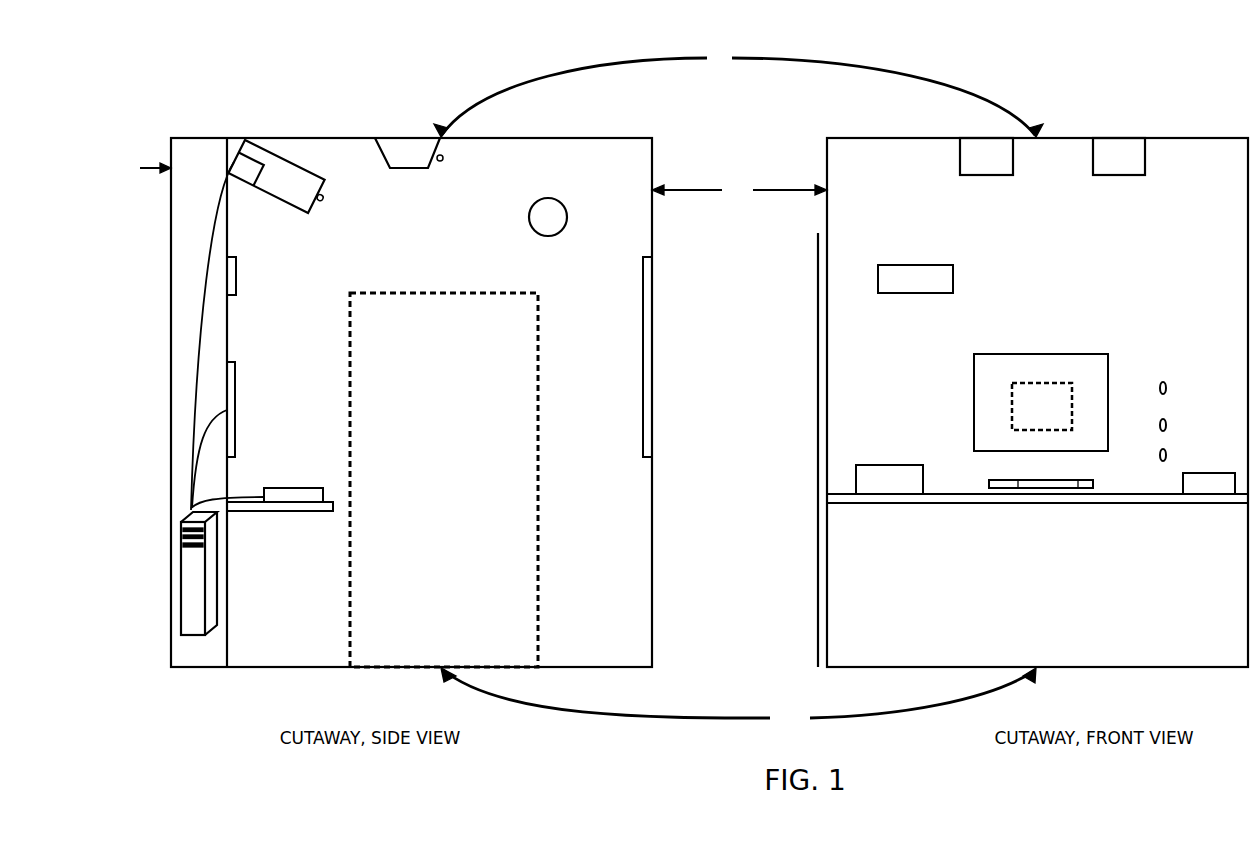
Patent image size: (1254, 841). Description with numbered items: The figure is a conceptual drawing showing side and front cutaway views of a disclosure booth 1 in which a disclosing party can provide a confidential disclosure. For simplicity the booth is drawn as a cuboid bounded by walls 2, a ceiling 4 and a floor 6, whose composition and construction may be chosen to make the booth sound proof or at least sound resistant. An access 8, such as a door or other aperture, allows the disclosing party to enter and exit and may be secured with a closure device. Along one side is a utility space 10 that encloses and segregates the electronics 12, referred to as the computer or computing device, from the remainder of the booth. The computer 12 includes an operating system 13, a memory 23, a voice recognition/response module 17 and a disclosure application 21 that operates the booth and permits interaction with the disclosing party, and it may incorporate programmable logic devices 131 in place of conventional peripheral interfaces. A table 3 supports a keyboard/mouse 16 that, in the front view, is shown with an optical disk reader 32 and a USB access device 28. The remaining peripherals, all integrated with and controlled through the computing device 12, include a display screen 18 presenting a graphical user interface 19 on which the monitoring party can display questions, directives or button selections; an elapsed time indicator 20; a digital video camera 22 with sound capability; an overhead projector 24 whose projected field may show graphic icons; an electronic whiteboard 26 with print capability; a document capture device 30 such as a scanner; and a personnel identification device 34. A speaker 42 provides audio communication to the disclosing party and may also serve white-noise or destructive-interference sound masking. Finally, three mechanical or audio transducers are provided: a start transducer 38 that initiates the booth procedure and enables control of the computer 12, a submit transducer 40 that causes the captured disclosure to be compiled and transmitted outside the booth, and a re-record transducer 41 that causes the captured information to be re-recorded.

The disclosure booth 1 is at (738, 93).
The walls 2 is at (476, 179).
The table 3 is at (275, 511).
The ceiling 4 is at (330, 138).
The floor 6 is at (738, 698).
The access 8 is at (432, 331).
The utility space 10 is at (190, 138).
The electronics 12 is at (181, 536).
The operating system 13 is at (181, 577).
The keyboard/mouse 16 is at (290, 488).
The voice recognition/response application or module 17 is at (185, 636).
The display screen 18 is at (236, 415).
The graphical user interface 19 is at (1033, 415).
The elapsed time indicator 20 is at (236, 291).
The disclosure application 21 is at (196, 636).
The digital video camera 22 is at (1126, 176).
The memory 23 is at (181, 625).
The overhead projector 24 is at (410, 138).
The electronic whiteboard 26 is at (643, 372).
The USB access device 28 is at (1086, 489).
The document capture device 30 is at (884, 465).
The optical disk reader 32 is at (1011, 489).
The personnel identification device 34 is at (1215, 473).
The start transducer 38 is at (1168, 392).
The submit transducer 40 is at (1168, 428).
The re-record transducer 41 is at (1168, 458).
The speaker 42 is at (556, 214).
The programmable logic device 131 is at (245, 170).